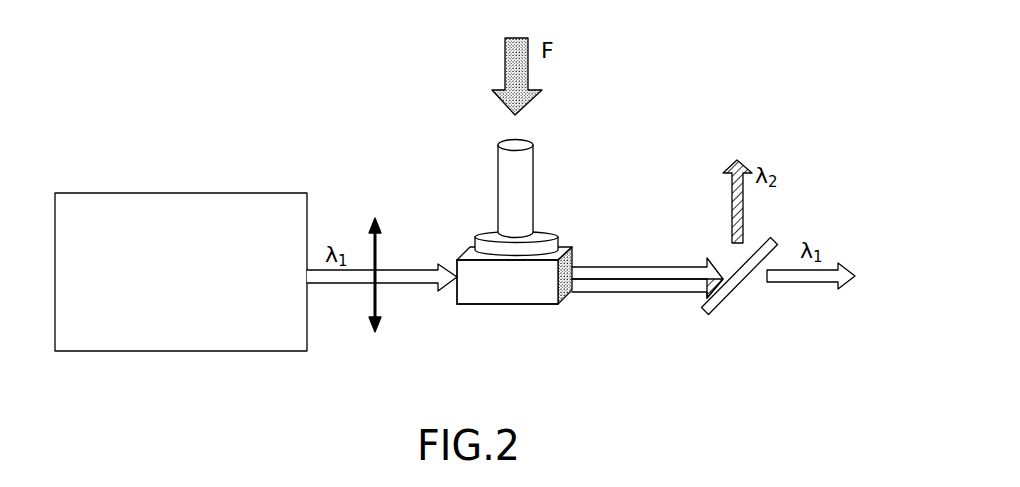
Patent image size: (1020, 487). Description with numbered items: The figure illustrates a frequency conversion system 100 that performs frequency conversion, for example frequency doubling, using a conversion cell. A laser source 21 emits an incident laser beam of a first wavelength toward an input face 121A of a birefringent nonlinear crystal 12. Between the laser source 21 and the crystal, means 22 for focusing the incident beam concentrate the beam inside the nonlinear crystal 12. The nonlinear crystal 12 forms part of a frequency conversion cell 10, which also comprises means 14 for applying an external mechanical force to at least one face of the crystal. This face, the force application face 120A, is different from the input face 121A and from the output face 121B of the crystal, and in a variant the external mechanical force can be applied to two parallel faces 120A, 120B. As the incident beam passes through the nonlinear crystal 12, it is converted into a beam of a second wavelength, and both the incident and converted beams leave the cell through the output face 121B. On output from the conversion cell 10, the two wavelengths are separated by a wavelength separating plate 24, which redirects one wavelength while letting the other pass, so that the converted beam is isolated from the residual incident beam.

The frequency conversion system 100 is at (775, 93).
The frequency conversion cell 10 is at (536, 260).
The birefringent nonlinear crystal 12 is at (536, 297).
The means for applying an external mechanical force 14 is at (535, 173).
The laser source 21 is at (210, 193).
The means for focusing the incident beam 22 is at (370, 334).
The wavelength separating plate 24 is at (724, 300).
The force application face 120A is at (469, 252).
The parallel face 120B is at (482, 305).
The input face 121A is at (457, 289).
The output face 121B is at (573, 250).